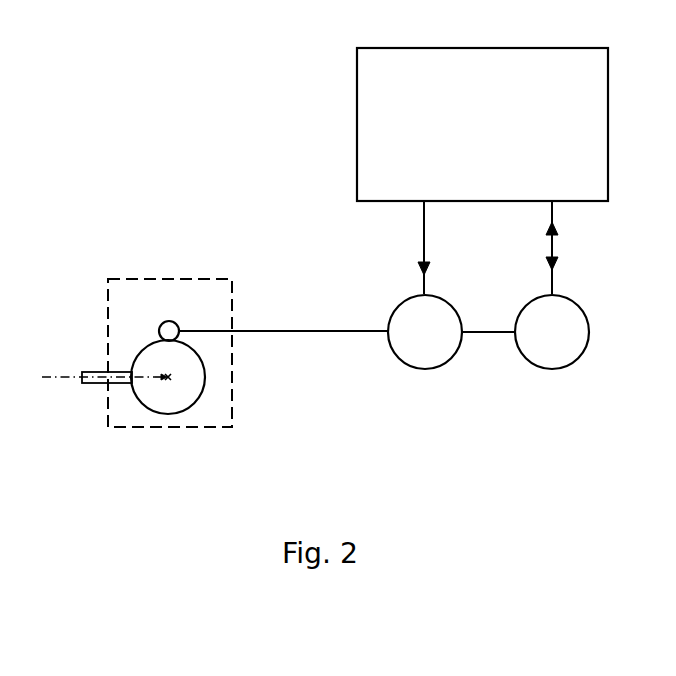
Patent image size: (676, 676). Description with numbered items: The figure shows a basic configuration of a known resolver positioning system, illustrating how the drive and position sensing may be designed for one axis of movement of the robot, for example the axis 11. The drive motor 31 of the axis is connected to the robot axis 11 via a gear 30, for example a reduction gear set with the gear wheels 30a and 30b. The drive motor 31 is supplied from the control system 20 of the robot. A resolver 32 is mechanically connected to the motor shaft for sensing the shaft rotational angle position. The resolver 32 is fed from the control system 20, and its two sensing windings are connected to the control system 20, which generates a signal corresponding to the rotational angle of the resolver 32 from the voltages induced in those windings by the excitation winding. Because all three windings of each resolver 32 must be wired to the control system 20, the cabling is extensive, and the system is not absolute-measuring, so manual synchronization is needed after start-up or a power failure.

The control system 20 is at (386, 126).
The drive motor 31 is at (427, 353).
The resolver 32 is at (562, 349).
The gear 30 is at (137, 418).
The gear wheel 30a is at (198, 382).
The gear wheel 30b is at (165, 326).
The axis 11 is at (68, 377).